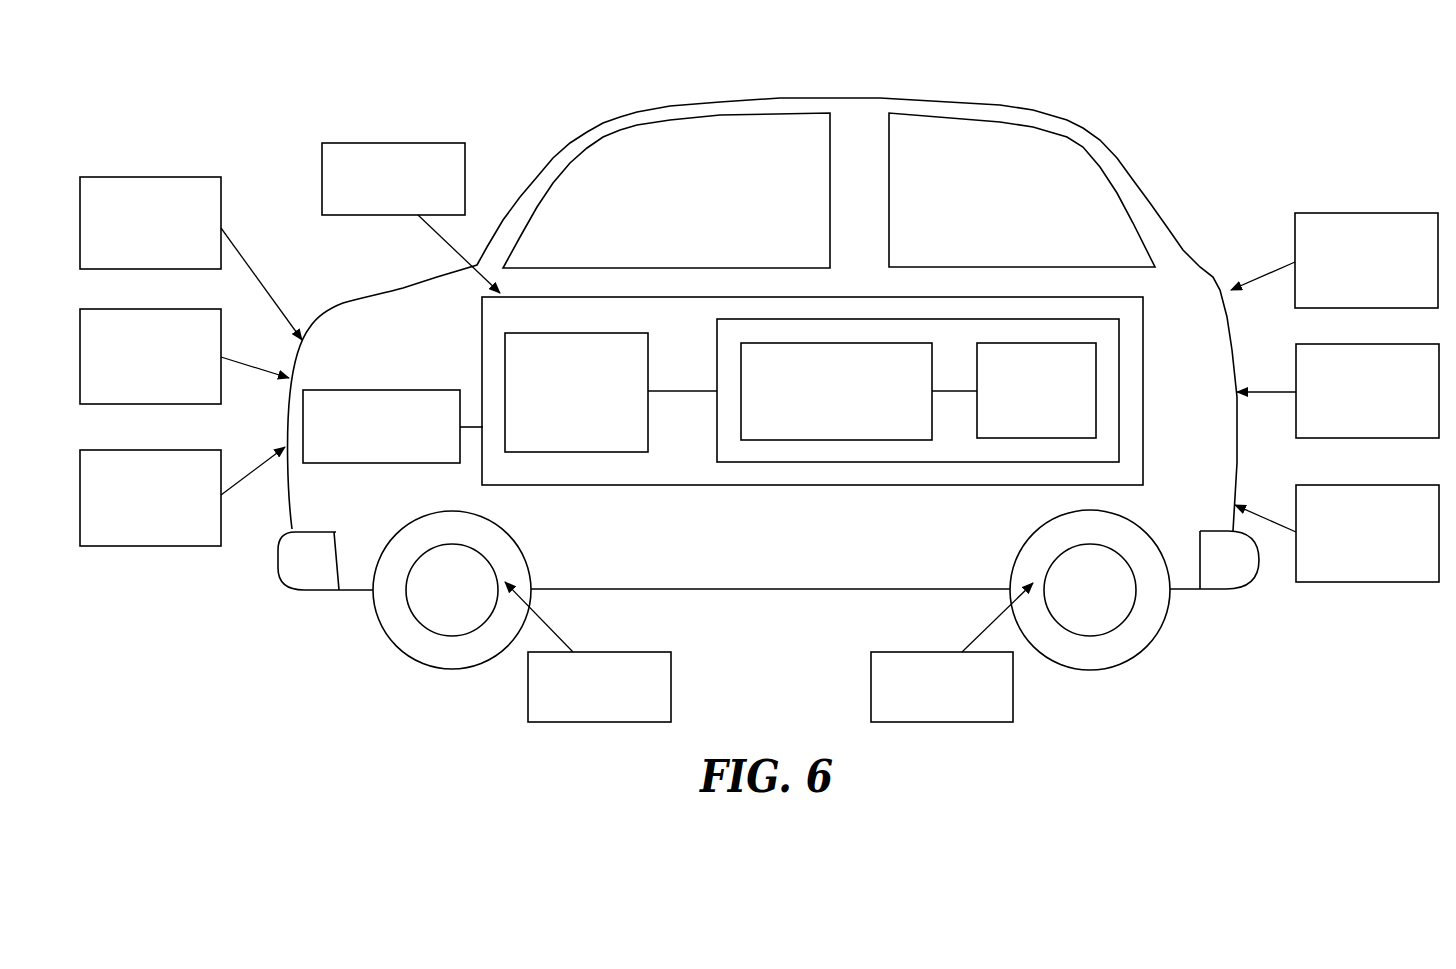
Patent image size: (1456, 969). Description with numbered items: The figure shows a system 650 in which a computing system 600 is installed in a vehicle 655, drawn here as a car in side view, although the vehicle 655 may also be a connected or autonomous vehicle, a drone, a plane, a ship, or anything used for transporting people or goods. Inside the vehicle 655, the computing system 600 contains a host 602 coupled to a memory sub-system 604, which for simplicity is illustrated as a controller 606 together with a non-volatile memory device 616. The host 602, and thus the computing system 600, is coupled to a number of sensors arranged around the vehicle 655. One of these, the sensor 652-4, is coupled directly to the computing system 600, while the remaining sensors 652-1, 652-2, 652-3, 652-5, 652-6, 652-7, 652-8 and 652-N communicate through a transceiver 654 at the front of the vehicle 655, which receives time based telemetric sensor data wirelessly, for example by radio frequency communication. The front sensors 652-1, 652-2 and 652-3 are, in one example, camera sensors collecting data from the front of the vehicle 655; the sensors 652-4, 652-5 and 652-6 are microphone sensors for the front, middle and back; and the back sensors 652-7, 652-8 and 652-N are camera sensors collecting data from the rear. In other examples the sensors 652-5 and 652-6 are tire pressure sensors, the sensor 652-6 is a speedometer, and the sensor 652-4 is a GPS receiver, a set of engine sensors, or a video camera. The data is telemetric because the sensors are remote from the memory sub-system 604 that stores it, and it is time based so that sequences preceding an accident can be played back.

The system 650 is at (226, 53).
The vehicle 655 is at (617, 124).
The sensor 652-1 is at (150, 184).
The sensor 652-2 is at (150, 396).
The sensor 652-3 is at (150, 538).
The sensor 652-4 is at (396, 146).
The sensor 652-5 is at (601, 715).
The sensor 652-6 is at (942, 715).
The sensor 652-7 is at (1361, 573).
The sensor 652-8 is at (1361, 429).
The sensor 652-N is at (1361, 221).
The transceiver 654 is at (393, 426).
The computing system 600 is at (660, 477).
The host 602 is at (576, 392).
The memory sub-system 604 is at (838, 455).
The controller 606 is at (836, 391).
The non-volatile memory device 616 is at (1086, 393).